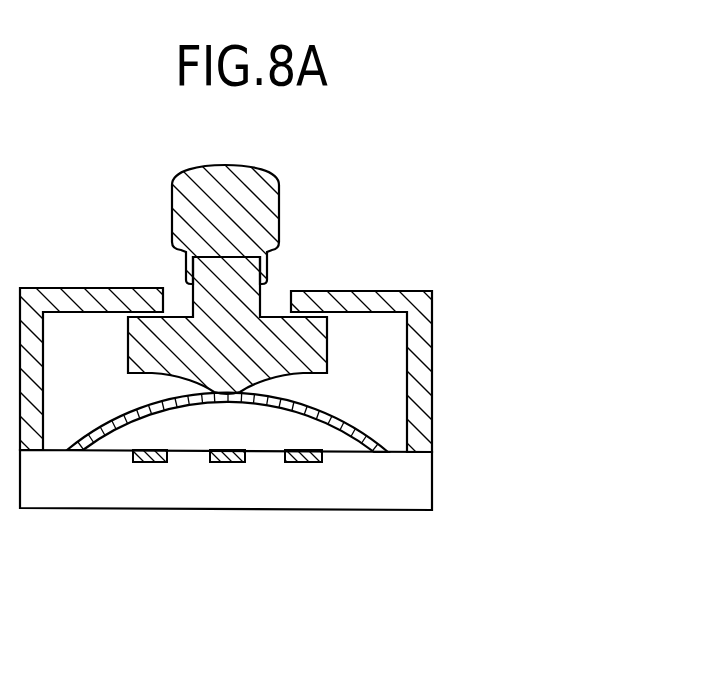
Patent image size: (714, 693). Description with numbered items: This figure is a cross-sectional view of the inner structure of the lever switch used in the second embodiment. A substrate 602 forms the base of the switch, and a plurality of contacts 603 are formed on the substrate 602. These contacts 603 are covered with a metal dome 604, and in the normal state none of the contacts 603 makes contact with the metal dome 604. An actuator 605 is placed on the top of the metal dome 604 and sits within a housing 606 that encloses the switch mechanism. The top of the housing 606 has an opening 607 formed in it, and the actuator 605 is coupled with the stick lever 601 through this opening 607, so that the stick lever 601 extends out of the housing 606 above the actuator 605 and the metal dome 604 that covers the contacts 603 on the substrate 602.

The stick lever 601 is at (279, 198).
The substrate 602 is at (417, 495).
The contacts 603 is at (150, 462).
The metal dome 604 is at (360, 427).
The actuator 605 is at (327, 343).
The housing 606 is at (421, 291).
The opening 607 is at (160, 278).